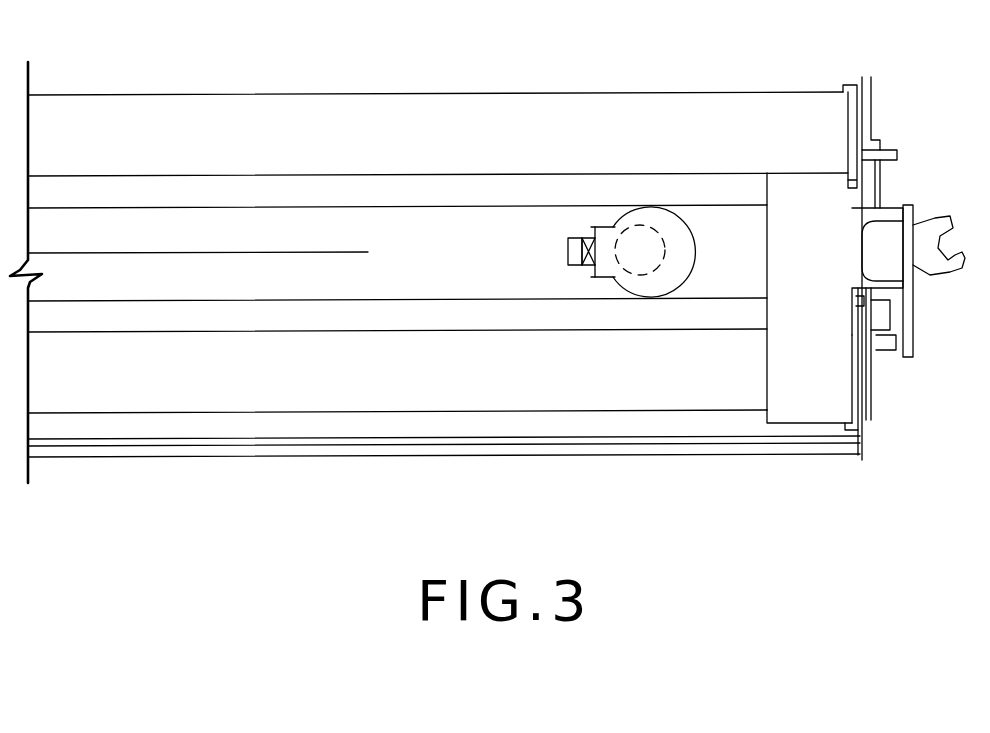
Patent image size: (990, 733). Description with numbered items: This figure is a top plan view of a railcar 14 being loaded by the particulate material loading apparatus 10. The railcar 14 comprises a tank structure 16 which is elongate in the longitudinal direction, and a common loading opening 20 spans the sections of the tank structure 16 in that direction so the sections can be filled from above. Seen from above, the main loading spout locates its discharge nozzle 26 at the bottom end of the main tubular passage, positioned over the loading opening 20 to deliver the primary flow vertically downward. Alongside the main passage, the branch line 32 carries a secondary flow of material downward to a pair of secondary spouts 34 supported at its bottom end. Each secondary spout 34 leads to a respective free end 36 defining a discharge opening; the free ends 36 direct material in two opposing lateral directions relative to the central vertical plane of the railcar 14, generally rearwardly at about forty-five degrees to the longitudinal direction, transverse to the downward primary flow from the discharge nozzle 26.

The particulate material loading apparatus 10 is at (557, 264).
The railcar 14 is at (553, 92).
The tank structure 16 is at (681, 103).
The loading opening 20 is at (368, 205).
The discharge nozzle 26 is at (672, 243).
The branch line 32 is at (568, 250).
The secondary spouts 34 is at (589, 228).
The free ends 36 is at (593, 255).